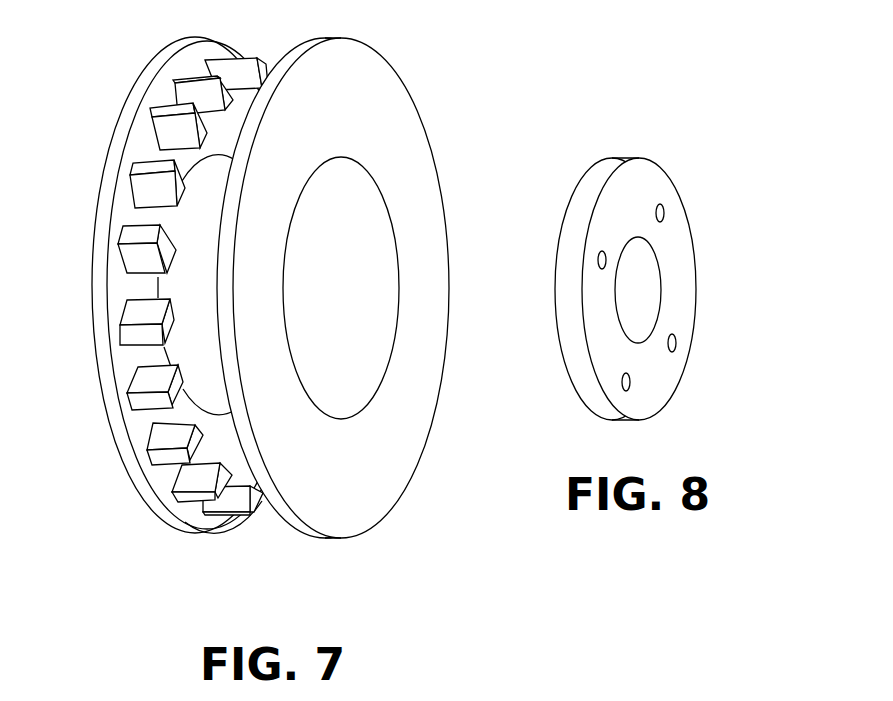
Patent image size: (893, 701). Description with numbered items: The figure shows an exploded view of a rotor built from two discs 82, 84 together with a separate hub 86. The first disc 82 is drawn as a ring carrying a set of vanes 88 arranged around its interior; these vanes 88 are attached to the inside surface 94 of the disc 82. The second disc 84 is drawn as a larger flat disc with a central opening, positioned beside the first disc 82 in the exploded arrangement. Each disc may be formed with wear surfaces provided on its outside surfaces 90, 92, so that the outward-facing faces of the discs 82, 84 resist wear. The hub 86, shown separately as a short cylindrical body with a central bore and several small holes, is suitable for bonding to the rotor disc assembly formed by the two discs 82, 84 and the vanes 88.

In FIG. 7, the disc 82 is at (175, 302).
In FIG. 7, the disc 84 is at (360, 301).
In FIG. 8, the hub 86 is at (692, 240).
In FIG. 7, the vanes 88 is at (225, 72).
In FIG. 7, the outside surface 90 is at (372, 502).
In FIG. 7, the outside surface 92 is at (127, 460).
In FIG. 7, the inside surface 94 is at (215, 527).